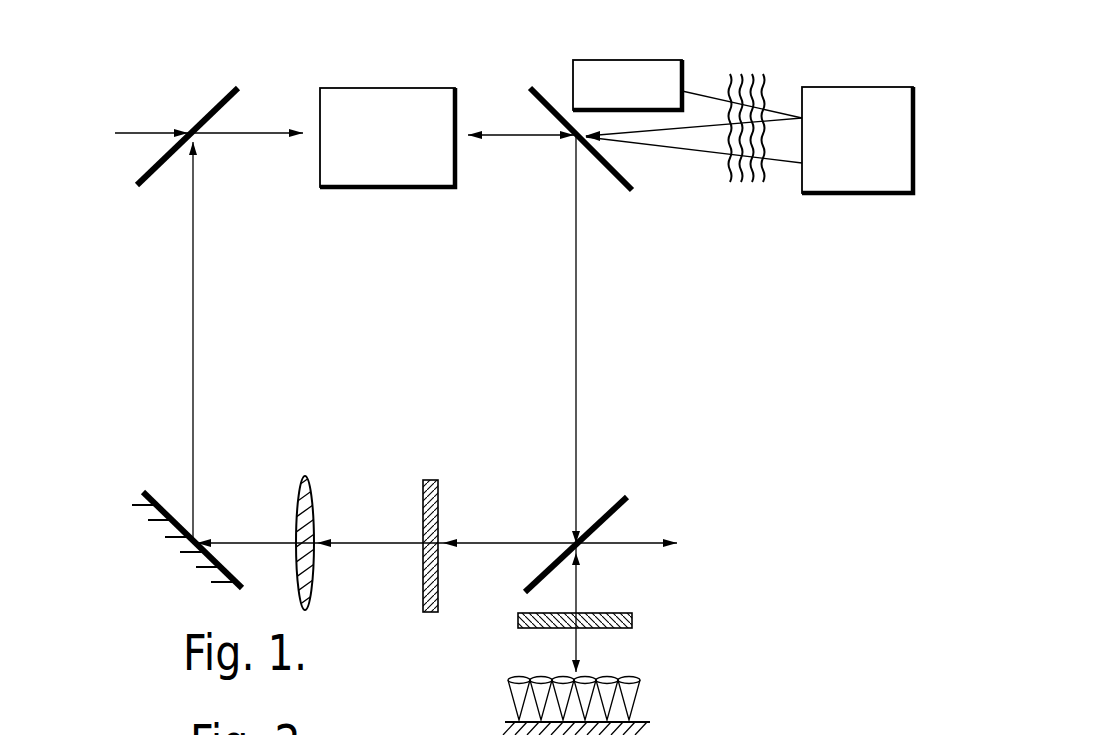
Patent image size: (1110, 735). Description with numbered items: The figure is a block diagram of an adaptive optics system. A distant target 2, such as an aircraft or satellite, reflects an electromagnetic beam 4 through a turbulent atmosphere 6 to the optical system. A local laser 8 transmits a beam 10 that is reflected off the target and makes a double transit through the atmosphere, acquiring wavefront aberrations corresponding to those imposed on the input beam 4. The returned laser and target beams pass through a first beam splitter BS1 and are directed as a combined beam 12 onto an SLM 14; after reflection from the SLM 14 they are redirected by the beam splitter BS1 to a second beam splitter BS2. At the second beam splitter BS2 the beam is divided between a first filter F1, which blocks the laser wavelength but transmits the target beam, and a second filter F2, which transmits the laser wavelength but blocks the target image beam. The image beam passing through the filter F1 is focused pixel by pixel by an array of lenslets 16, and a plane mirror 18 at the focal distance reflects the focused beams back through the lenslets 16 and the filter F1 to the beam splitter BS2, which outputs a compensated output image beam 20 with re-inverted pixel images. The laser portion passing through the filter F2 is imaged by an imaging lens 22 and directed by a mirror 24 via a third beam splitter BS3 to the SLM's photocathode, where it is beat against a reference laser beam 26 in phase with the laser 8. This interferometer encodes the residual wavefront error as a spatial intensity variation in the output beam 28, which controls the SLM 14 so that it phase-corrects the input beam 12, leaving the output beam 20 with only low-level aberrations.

The distant target 2 is at (883, 87).
The electromagnetic beam 4 is at (784, 163).
The turbulent atmosphere 6 is at (779, 62).
The local laser 8 is at (678, 58).
The laser beam 10 is at (707, 92).
The combined beam 12 is at (520, 138).
The SLM 14 is at (455, 88).
The array of lenslets 16 is at (643, 678).
The plane mirror 18 is at (645, 717).
The compensated output image beam 20 is at (623, 541).
The imaging lens 22 is at (297, 510).
The mirror 24 is at (152, 495).
The reference laser beam 26 is at (148, 131).
The output beam 28 is at (249, 135).
The first beam splitter BS1 is at (535, 87).
The second beam splitter BS2 is at (608, 506).
The third beam splitter BS3 is at (224, 94).
The first filter F1 is at (632, 613).
The second filter F2 is at (423, 498).